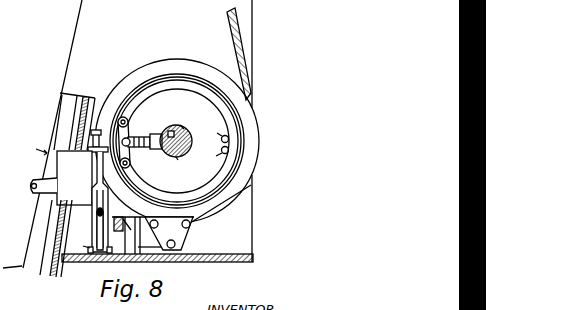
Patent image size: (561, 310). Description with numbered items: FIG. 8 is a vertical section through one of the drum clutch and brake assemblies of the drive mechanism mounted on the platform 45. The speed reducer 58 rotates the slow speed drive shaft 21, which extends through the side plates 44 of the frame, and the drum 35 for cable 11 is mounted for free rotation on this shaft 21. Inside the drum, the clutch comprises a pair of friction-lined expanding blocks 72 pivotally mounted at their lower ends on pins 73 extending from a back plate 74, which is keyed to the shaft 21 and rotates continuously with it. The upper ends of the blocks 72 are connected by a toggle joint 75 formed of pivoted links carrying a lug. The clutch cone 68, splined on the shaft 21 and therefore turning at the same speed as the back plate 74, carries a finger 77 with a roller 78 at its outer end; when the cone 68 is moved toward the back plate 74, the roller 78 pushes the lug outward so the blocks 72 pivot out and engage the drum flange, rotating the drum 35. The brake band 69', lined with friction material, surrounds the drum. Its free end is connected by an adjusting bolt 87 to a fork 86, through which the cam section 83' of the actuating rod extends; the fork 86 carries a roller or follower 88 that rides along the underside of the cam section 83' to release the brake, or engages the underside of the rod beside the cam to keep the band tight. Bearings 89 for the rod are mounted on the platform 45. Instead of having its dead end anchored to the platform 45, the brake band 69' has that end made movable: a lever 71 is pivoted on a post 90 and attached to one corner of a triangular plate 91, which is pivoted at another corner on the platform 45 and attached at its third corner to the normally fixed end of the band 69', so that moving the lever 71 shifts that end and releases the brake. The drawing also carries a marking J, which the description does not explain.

The side plates 44 is at (115, 51).
The cable 11 is at (229, 23).
The drum 35 is at (250, 107).
The brake band 69' is at (200, 141).
The expanding blocks 72 is at (137, 93).
The pins 73 is at (222, 145).
The toggle joint 75 is at (128, 130).
The roller 78 is at (131, 159).
The finger 77 is at (158, 134).
The cone 68 is at (188, 132).
The back plate 74 is at (190, 112).
The slow speed drive shaft 21 is at (178, 158).
The adjusting bolt 87 is at (95, 137).
The direction J is at (34, 149).
The speed reducer 58 is at (62, 178).
The cam section 83' is at (49, 238).
The fork 86 is at (93, 200).
The roller or follower 88 is at (97, 253).
The bearings 89 is at (84, 246).
The lever 71 is at (125, 233).
The triangular plate 91 is at (176, 233).
The post 90 is at (171, 243).
The platform 45 is at (198, 260).